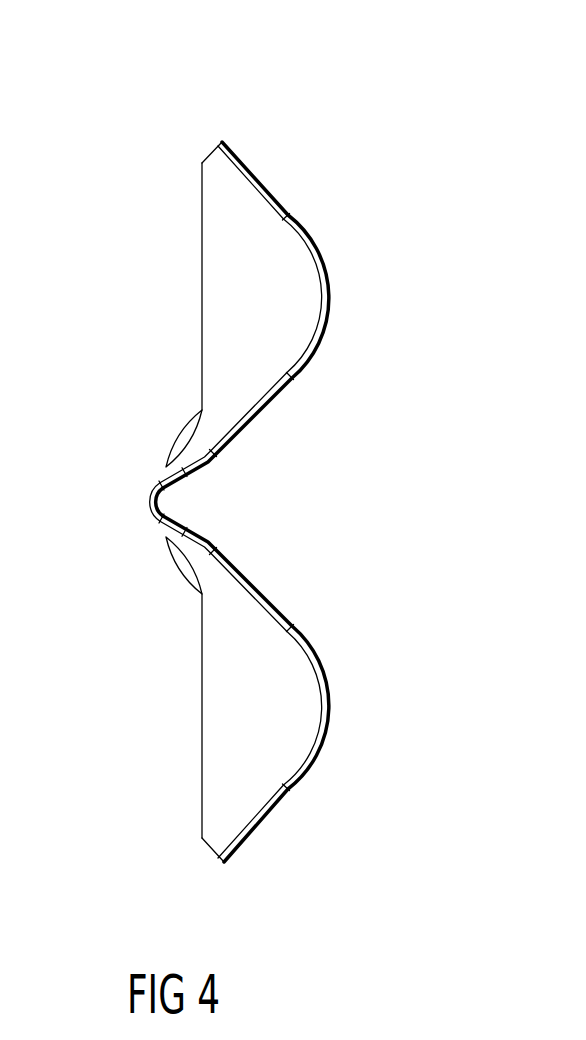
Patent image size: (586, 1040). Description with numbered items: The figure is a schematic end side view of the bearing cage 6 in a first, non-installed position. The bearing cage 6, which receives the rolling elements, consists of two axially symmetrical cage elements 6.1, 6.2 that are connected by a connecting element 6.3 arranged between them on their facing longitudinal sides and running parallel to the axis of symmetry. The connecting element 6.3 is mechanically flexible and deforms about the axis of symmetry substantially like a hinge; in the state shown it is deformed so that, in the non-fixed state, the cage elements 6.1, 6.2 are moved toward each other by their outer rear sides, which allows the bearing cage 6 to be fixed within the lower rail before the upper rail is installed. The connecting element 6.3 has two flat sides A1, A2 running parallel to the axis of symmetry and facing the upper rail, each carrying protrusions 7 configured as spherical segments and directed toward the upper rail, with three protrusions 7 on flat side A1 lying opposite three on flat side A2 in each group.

The bearing cage 6 is at (130, 104).
The cage element 6.1 is at (298, 302).
The cage element 6.2 is at (295, 717).
The connecting element 6.3 is at (138, 505).
The protrusion 7 is at (177, 435).
The flat side A1 is at (152, 478).
The flat side A2 is at (160, 532).